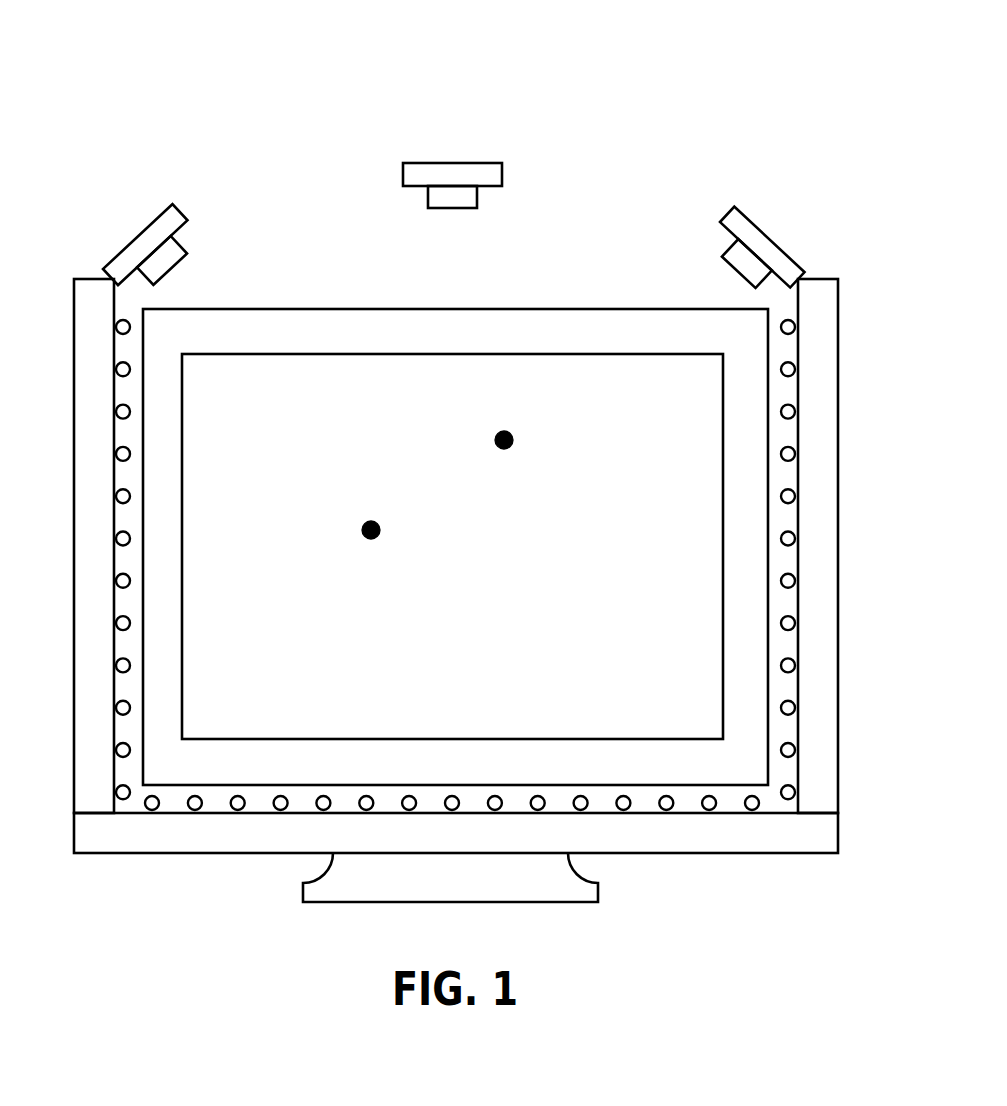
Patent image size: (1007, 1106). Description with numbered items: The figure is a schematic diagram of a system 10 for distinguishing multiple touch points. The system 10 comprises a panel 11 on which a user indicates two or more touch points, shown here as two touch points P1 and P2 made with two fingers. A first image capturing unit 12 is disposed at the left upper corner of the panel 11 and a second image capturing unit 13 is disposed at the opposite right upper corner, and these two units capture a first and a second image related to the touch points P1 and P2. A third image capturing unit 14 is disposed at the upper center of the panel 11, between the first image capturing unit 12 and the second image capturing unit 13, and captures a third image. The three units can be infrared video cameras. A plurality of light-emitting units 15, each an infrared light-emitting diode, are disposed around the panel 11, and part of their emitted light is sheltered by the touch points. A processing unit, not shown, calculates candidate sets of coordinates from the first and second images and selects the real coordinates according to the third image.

The system for distinguishing multiple touch points 10 is at (819, 119).
The panel 11 is at (617, 353).
The first image capturing unit 12 is at (182, 210).
The second image capturing unit 13 is at (738, 210).
The third image capturing unit 14 is at (462, 162).
The light-emitting units 15 is at (118, 403).
The touch point P1 is at (382, 508).
The touch point P2 is at (515, 420).